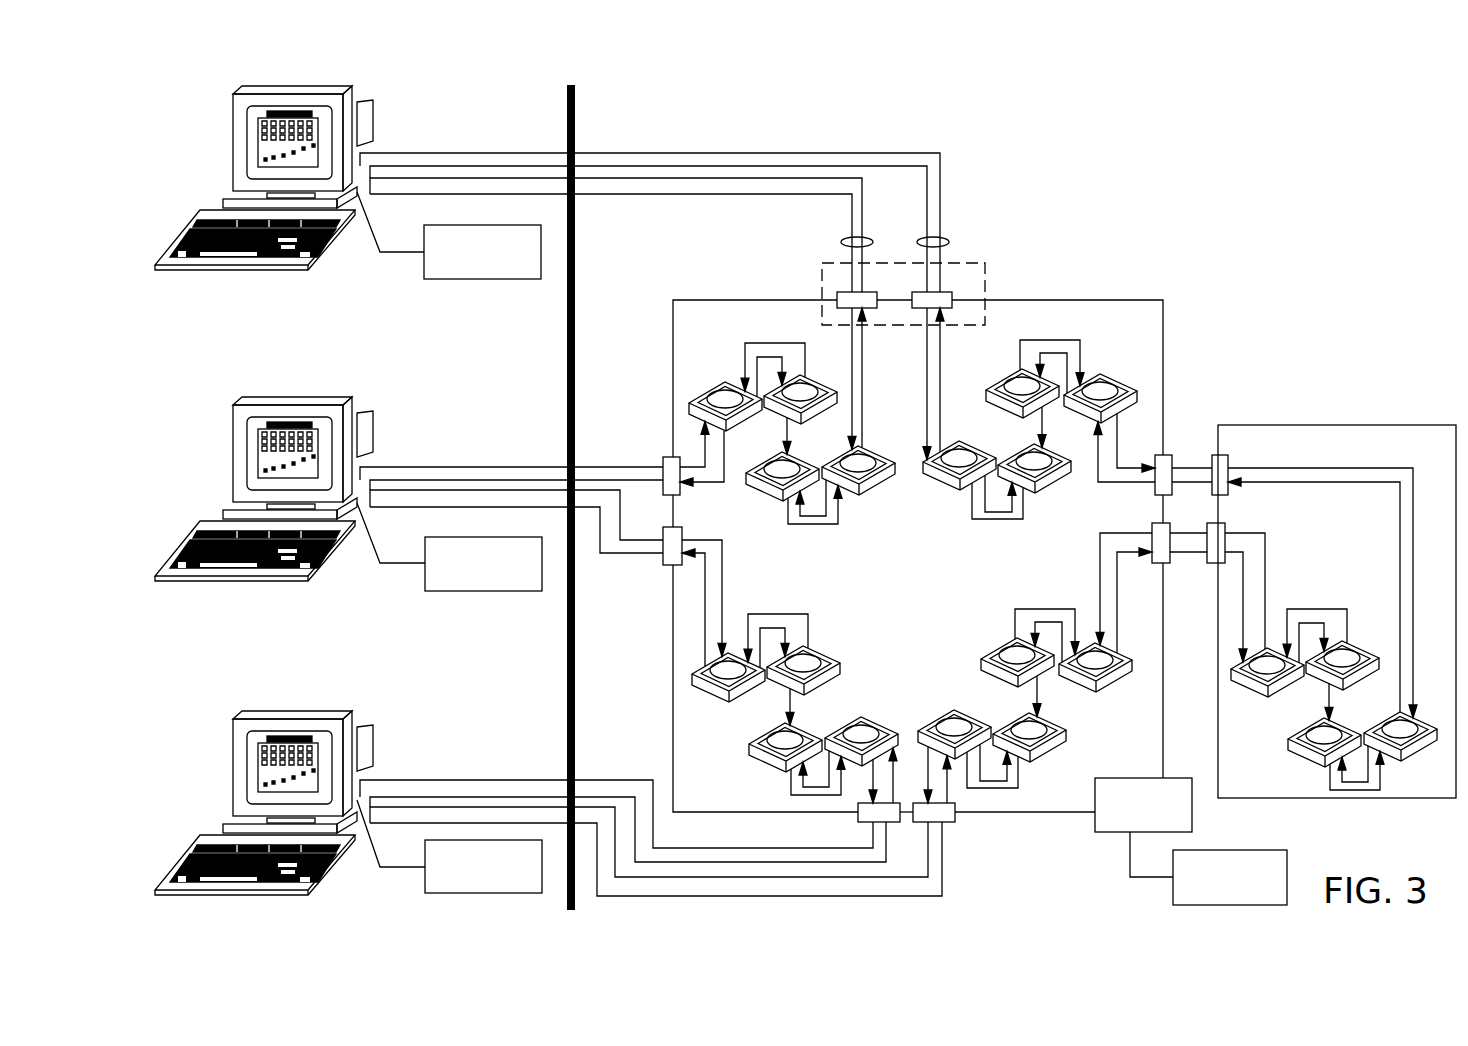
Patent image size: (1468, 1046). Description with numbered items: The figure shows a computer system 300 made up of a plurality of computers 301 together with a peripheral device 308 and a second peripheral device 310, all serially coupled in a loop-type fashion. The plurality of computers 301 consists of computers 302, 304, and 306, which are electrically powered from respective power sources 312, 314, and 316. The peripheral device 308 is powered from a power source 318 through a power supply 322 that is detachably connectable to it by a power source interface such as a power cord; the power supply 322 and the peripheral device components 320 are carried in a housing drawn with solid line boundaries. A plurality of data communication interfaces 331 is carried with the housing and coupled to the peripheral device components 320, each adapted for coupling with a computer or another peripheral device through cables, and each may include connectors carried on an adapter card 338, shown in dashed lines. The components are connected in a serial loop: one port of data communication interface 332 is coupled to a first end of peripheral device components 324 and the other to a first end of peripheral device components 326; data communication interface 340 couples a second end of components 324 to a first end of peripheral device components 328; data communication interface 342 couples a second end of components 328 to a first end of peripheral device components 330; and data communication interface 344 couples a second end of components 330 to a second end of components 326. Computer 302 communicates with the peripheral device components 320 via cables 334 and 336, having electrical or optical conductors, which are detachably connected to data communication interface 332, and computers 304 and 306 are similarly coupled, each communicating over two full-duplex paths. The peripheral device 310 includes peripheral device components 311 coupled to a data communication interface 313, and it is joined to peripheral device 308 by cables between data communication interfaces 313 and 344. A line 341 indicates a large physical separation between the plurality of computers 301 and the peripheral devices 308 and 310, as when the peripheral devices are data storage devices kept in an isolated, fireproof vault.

The computer system 300 is at (970, 911).
The plurality of computers 301 is at (400, 78).
The computer 302 is at (233, 130).
The computer 304 is at (233, 441).
The computer 306 is at (233, 756).
The peripheral device 308 is at (672, 385).
The peripheral device 310 is at (1300, 425).
The peripheral device components 311 is at (1348, 568).
The power source 312 is at (461, 279).
The data communication interface 313 is at (1193, 582).
The power source 314 is at (461, 591).
The power source 316 is at (437, 893).
The power source 318 is at (1195, 851).
The peripheral device components 320 is at (1148, 328).
The power supply 322 is at (1140, 778).
The peripheral device components 324 is at (850, 522).
The peripheral device components 326 is at (950, 521).
The peripheral device components 328 is at (841, 618).
The peripheral device components 330 is at (977, 628).
The plurality of data communication interfaces 331 is at (1124, 267).
The data communication interface 332 is at (1002, 264).
The cable 334 is at (845, 238).
The cable 336 is at (946, 238).
The adapter card 338 is at (822, 288).
The data communication interface 340 is at (663, 460).
The line 341 is at (577, 103).
The data communication interface 342 is at (968, 832).
The data communication interface 344 is at (1199, 407).